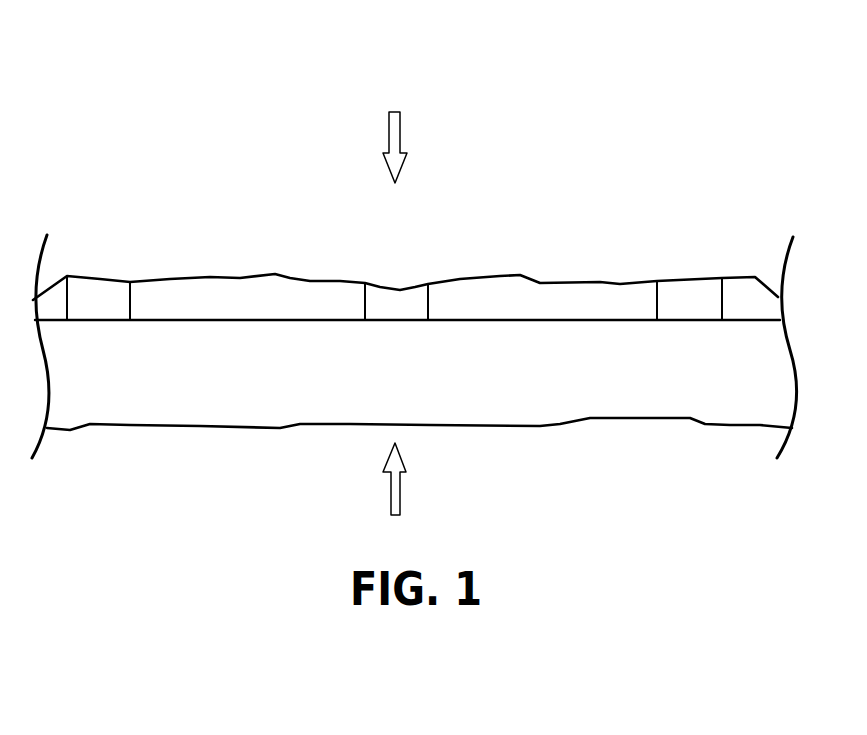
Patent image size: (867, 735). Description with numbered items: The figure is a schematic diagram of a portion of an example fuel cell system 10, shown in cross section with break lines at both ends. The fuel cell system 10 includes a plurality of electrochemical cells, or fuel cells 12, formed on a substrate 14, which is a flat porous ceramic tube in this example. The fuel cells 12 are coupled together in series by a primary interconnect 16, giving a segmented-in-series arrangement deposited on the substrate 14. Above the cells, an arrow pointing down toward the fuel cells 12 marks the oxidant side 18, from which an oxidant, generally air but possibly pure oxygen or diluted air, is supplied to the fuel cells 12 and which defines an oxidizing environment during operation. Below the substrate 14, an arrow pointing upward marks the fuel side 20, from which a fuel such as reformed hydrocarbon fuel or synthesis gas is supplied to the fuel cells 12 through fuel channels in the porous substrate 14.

The fuel cell system 10 is at (542, 93).
The electrochemical cells 12 is at (211, 277).
The substrate 14 is at (633, 421).
The primary interconnect 16 is at (400, 289).
The oxidant side 18 is at (389, 138).
The fuel side 20 is at (401, 500).